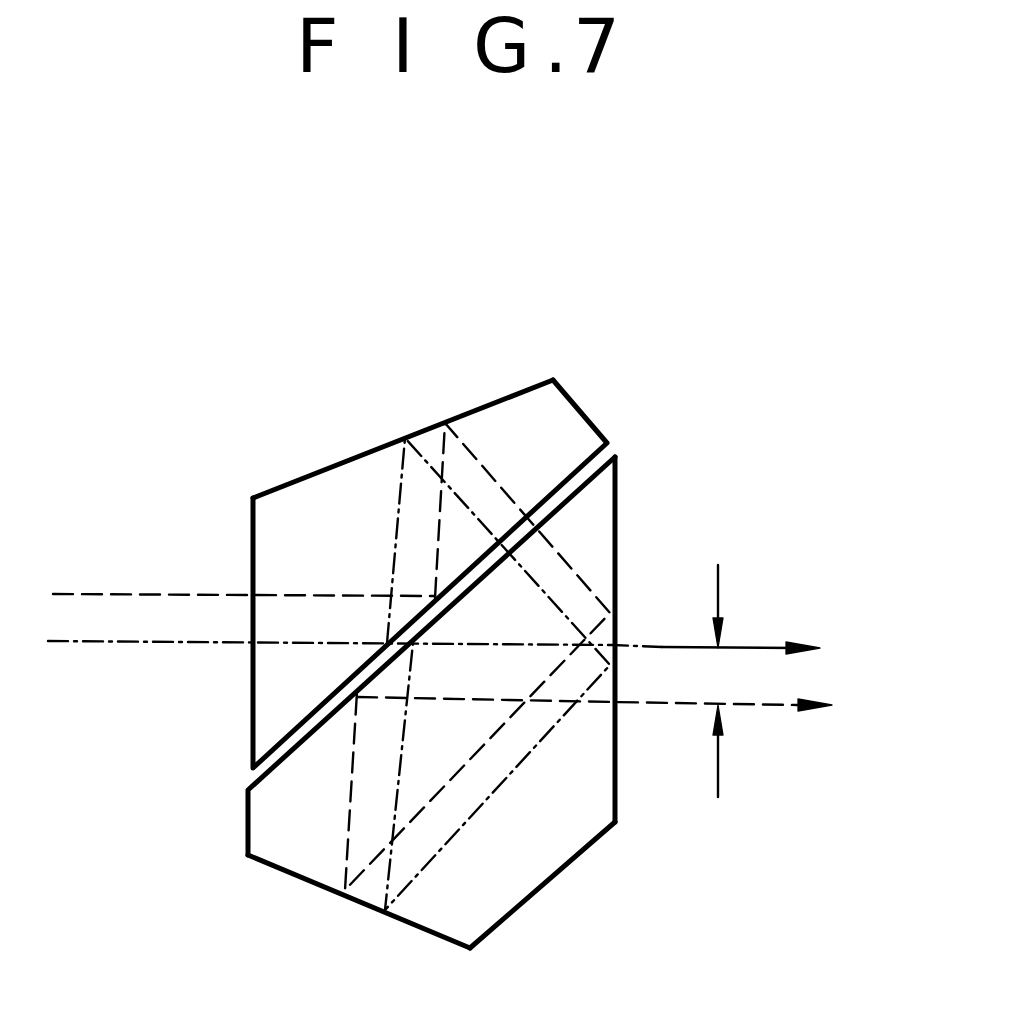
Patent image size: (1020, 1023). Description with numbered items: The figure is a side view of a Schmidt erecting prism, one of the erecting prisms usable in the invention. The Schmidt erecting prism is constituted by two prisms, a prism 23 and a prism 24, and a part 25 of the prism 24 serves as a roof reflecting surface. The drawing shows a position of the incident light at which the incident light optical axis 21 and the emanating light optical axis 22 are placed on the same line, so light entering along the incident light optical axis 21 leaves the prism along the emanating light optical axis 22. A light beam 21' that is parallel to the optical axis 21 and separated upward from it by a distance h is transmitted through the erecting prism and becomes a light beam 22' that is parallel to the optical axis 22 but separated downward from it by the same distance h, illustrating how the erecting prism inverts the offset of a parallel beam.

The incident light optical axis 21 is at (355, 674).
The light beam 21' is at (331, 656).
The emanating light optical axis 22 is at (755, 606).
The light beam 22' is at (599, 747).
The prism 23 is at (510, 427).
The prism 24 is at (613, 795).
The roof reflecting surface 25 is at (329, 916).
The separation distance h is at (716, 681).